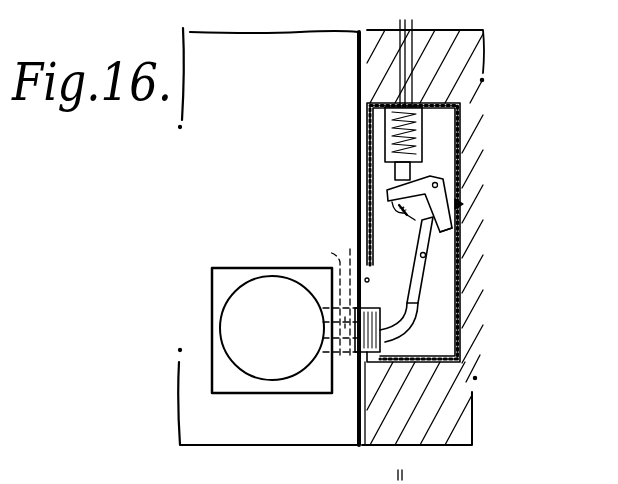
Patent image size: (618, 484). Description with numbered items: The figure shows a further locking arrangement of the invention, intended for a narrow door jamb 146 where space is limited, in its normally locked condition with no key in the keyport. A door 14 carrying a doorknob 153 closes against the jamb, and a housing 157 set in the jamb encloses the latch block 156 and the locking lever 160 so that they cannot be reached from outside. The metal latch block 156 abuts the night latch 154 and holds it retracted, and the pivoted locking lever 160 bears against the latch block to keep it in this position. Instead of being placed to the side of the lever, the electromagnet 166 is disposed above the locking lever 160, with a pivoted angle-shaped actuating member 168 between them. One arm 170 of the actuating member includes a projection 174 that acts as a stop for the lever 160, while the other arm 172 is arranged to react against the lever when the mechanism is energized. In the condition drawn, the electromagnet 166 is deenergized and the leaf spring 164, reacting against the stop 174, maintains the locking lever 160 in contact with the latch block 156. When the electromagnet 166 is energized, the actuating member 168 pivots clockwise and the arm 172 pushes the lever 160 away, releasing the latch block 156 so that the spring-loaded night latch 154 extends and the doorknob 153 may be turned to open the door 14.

The door 14 is at (320, 432).
The door jamb 146 is at (428, 432).
The doorknob 153 is at (250, 327).
The night latch 154 is at (343, 293).
The latch block 156 is at (407, 372).
The housing 157 is at (460, 340).
The locking lever 160 is at (415, 297).
The leaf spring 164 is at (400, 232).
The electromagnet 166 is at (415, 128).
The actuating member 168 is at (463, 203).
The arm 170 is at (418, 182).
The arm 172 is at (447, 228).
The projection 174 is at (397, 213).